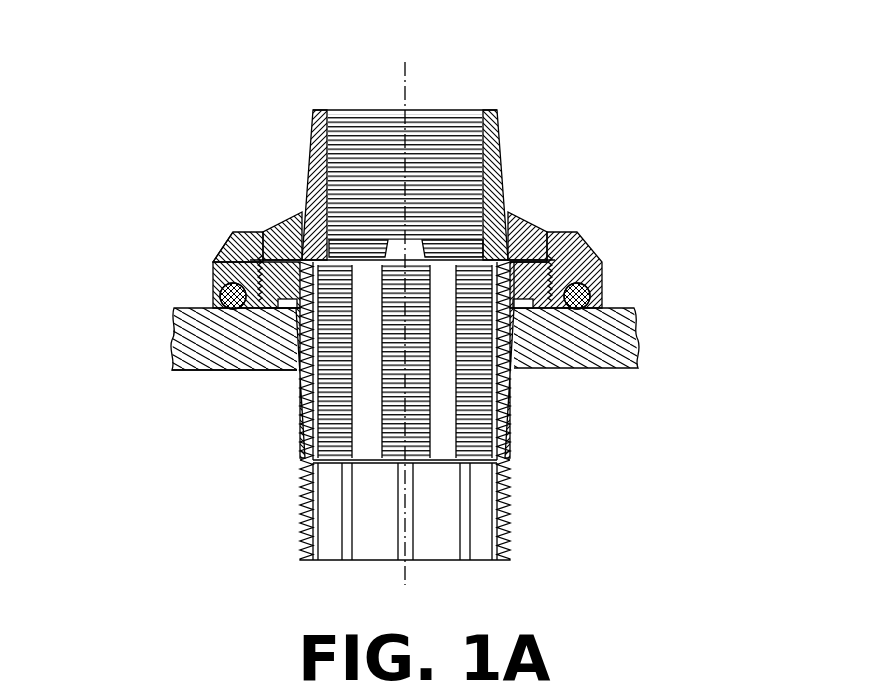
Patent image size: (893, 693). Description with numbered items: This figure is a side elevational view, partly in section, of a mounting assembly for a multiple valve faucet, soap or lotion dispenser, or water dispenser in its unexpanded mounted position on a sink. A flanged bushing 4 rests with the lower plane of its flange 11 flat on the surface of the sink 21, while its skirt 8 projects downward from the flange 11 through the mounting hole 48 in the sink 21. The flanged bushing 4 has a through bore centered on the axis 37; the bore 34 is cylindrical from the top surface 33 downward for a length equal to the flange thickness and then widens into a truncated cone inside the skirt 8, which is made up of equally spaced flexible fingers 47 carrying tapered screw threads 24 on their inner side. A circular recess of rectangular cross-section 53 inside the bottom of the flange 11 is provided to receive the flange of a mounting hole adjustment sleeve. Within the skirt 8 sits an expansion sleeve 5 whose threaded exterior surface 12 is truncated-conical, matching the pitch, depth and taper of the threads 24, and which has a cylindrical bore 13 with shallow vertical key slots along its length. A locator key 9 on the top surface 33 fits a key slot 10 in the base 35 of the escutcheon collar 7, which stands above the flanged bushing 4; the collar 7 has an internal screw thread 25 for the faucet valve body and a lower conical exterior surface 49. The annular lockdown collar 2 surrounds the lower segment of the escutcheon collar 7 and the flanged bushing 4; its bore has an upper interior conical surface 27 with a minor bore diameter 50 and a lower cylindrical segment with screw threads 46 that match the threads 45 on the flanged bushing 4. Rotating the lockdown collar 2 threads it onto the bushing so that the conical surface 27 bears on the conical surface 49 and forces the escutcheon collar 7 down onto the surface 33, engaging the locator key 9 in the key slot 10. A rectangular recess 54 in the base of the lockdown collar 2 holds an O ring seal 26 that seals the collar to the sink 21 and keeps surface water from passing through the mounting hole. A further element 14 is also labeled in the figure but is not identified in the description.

The lockdown collar 2 is at (585, 250).
The flanged bushing 4 is at (520, 302).
The expansion sleeve 5 is at (517, 535).
The escutcheon collar 7 is at (306, 165).
The skirt 8 is at (518, 392).
The locator key 9 is at (437, 244).
The key slot 10 is at (380, 104).
The flange 11 is at (523, 257).
The threaded exterior surface 12 is at (297, 552).
The cylindrical bore 13 is at (371, 545).
The lower bore wall 14 is at (470, 542).
The sink 21 is at (637, 336).
The screw threads 24 is at (516, 445).
The internal screw thread 25 is at (368, 246).
The O ring seal 26 is at (180, 372).
The interior conical surface 27 is at (230, 243).
The top surface 33 is at (502, 256).
The cylindrical bore 34 is at (267, 270).
The base 35 is at (295, 260).
The axis 37 is at (407, 76).
The threads 45 is at (580, 310).
The screw threads 46 is at (220, 274).
The flexible fingers 47 is at (298, 452).
The mounting hole 48 is at (290, 312).
The conical exterior surface 49 is at (283, 243).
The minor bore diameter 50 is at (540, 262).
The circular recess 53 is at (272, 312).
The rectangular recess 54 is at (600, 290).